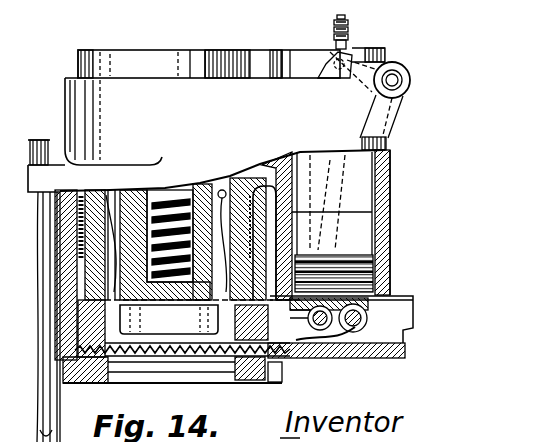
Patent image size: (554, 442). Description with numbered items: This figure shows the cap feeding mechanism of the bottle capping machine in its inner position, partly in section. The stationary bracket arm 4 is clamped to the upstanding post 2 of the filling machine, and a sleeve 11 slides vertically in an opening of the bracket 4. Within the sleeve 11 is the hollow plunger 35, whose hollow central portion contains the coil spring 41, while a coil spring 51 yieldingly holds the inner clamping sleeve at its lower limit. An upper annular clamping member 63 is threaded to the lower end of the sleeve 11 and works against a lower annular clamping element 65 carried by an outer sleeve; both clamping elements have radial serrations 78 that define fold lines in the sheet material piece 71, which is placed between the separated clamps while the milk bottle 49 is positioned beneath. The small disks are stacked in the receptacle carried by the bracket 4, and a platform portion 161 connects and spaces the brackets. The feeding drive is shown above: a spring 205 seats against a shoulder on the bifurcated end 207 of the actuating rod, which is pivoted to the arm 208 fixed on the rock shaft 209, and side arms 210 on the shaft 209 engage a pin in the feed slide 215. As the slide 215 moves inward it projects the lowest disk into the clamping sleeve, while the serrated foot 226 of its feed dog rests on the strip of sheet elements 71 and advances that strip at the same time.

The stationary post 2 is at (48, 139).
The bracket arm 4 is at (68, 100).
The sleeve 11 is at (123, 60).
The hollow plunger 35 is at (205, 185).
The coil spring 41 is at (172, 188).
The milk bottle 49 is at (275, 30).
The coil spring 51 is at (0, 152).
The upper annular clamping member 63 is at (292, 358).
The lower annular clamping element 65 is at (280, 432).
The sheet material piece 71 is at (120, 386).
The radial serrations 78 is at (210, 380).
The platform portion 161 is at (392, 360).
The spring 205 is at (340, 27).
The bifurcated end 207 is at (340, 17).
The arm 208 is at (380, 50).
The rock shaft 209 is at (384, 112).
The arm 210 is at (386, 143).
The feed slide 215 is at (392, 297).
The serrated foot 226 is at (324, 360).